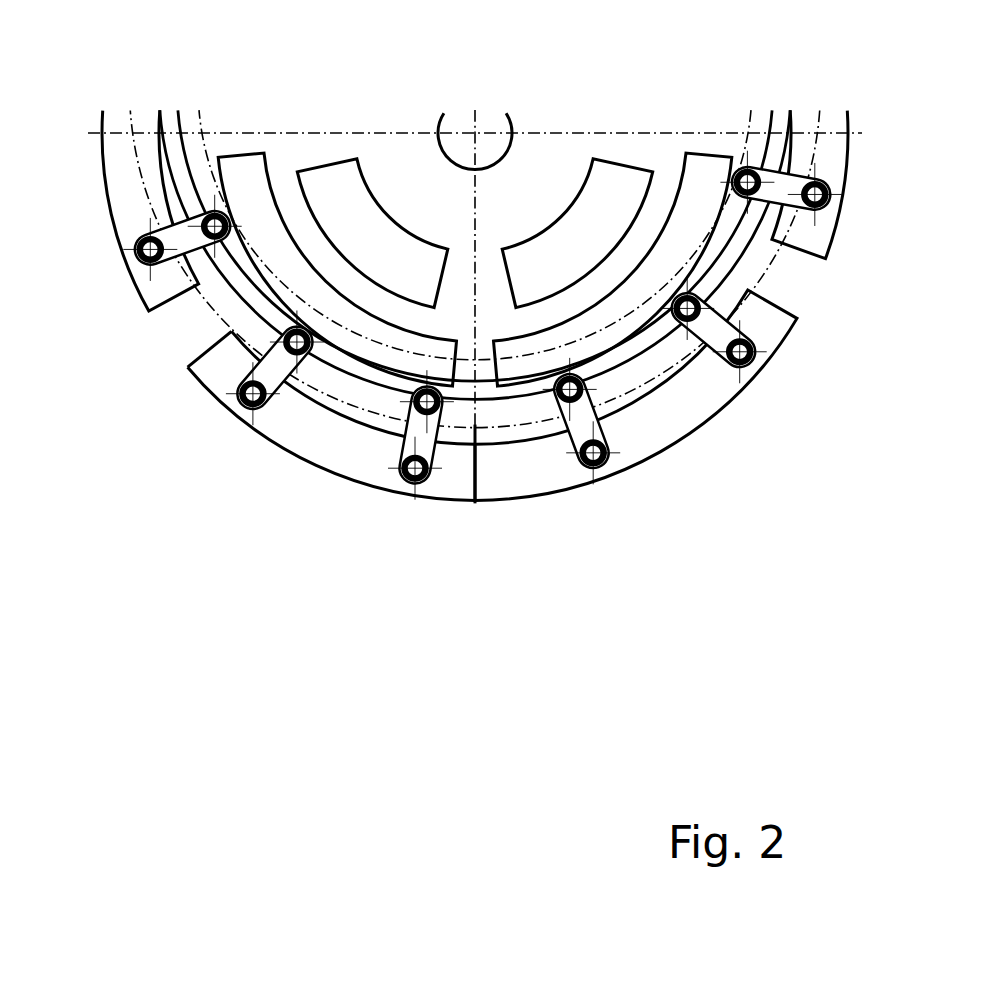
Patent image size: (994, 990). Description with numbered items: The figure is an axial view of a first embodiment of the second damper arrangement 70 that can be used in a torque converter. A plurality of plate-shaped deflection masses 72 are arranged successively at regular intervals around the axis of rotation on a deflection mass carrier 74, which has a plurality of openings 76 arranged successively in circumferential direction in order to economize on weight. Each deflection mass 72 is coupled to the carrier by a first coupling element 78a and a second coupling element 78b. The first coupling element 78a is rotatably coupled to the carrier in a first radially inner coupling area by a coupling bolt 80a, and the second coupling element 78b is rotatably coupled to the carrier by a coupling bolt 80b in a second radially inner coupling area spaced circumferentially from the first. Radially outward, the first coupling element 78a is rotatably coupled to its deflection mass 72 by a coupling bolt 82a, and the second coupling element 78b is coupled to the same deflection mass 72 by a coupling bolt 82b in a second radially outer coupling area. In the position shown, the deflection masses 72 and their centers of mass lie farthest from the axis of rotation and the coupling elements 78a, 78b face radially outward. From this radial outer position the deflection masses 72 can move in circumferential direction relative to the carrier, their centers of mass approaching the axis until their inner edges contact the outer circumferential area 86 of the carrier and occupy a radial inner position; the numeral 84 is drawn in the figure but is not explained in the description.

The second damper arrangement 70 is at (540, 626).
The deflection mass 72 is at (120, 200).
The deflection mass carrier 74 is at (575, 162).
The opening 76 is at (368, 237).
The first coupling element 78a is at (297, 313).
The second coupling element 78b is at (432, 417).
The coupling bolt 80a is at (188, 370).
The coupling bolt 80b is at (468, 446).
The coupling bolt 82a is at (244, 408).
The coupling bolt 82b is at (408, 482).
The gap between segments 84 is at (233, 332).
The outer circumferential area 86 is at (512, 428).